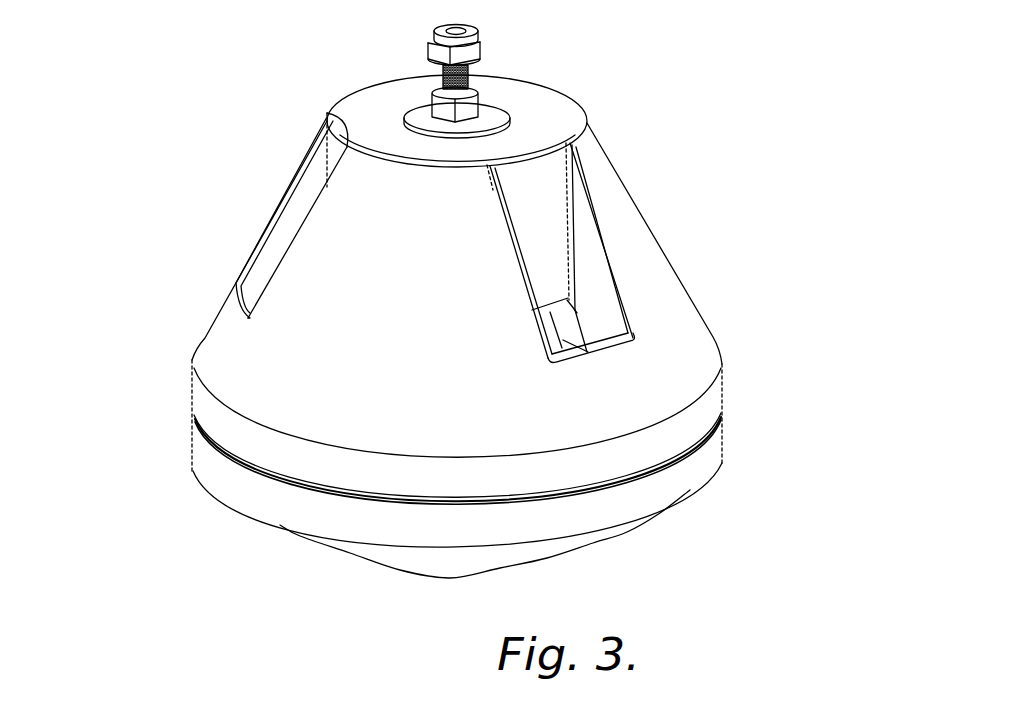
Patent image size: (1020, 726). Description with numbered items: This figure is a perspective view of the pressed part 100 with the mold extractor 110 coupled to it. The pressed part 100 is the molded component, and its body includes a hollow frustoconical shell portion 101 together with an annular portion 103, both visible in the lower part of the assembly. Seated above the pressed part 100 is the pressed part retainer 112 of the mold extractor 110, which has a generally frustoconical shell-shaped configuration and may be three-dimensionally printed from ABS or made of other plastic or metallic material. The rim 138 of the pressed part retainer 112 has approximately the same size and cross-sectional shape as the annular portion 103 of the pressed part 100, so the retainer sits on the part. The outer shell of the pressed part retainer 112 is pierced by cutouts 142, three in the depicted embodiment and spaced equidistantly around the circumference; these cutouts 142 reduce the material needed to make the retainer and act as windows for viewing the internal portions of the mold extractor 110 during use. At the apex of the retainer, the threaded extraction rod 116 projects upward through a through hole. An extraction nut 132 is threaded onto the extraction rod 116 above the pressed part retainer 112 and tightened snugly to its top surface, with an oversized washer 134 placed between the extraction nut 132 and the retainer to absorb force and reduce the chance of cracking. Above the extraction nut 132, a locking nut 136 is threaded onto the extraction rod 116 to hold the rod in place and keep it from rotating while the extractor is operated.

The pressed part 100 is at (228, 483).
The frustoconical shell portion 101 is at (405, 560).
The annular portion 103 is at (690, 470).
The mold extractor 110 is at (220, 338).
The pressed part retainer 112 is at (624, 210).
The extraction rod 116 is at (441, 70).
The extraction nut 132 is at (467, 110).
The oversized washer 134 is at (420, 116).
The locking nut 136 is at (482, 55).
The rim 138 is at (198, 450).
The cutout 142 is at (277, 240).